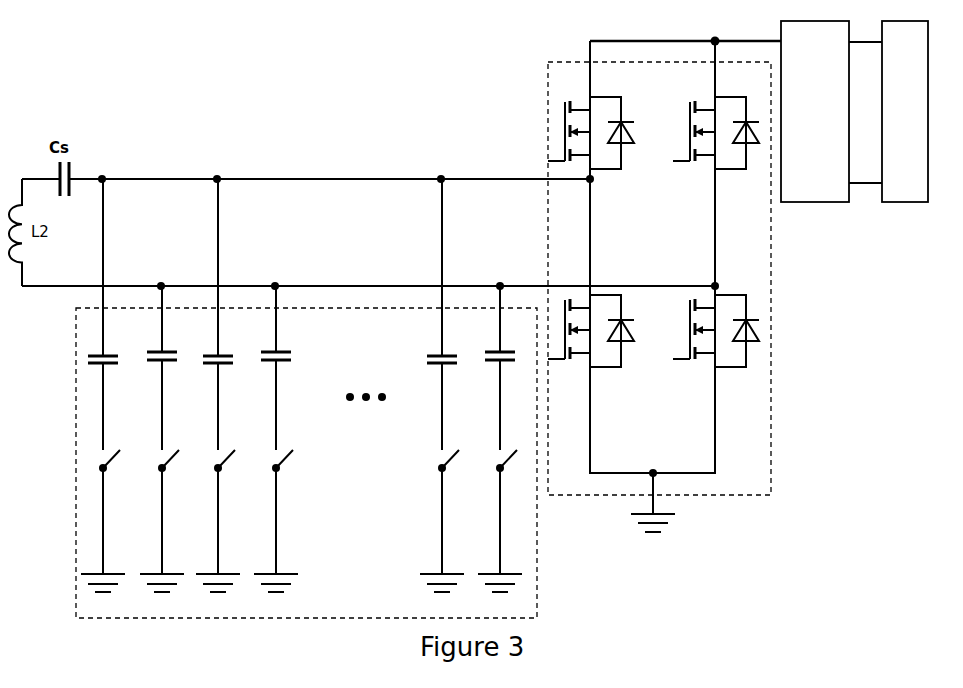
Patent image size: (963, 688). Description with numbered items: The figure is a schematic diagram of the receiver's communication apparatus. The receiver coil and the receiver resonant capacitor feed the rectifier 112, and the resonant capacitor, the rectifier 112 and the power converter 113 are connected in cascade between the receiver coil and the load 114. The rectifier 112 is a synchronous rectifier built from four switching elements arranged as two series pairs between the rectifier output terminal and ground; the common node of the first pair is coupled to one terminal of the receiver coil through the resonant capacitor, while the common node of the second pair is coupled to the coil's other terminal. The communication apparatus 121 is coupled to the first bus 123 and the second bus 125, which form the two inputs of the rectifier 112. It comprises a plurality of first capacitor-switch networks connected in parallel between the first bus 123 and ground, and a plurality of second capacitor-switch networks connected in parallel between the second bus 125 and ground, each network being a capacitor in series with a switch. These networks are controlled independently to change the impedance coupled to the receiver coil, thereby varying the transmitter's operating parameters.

The rectifier 112 is at (659, 286).
The power converter 113 is at (807, 202).
The load 114 is at (907, 202).
The communication apparatus 121 is at (306, 398).
The first bus 123 is at (321, 179).
The second bus 125 is at (313, 286).